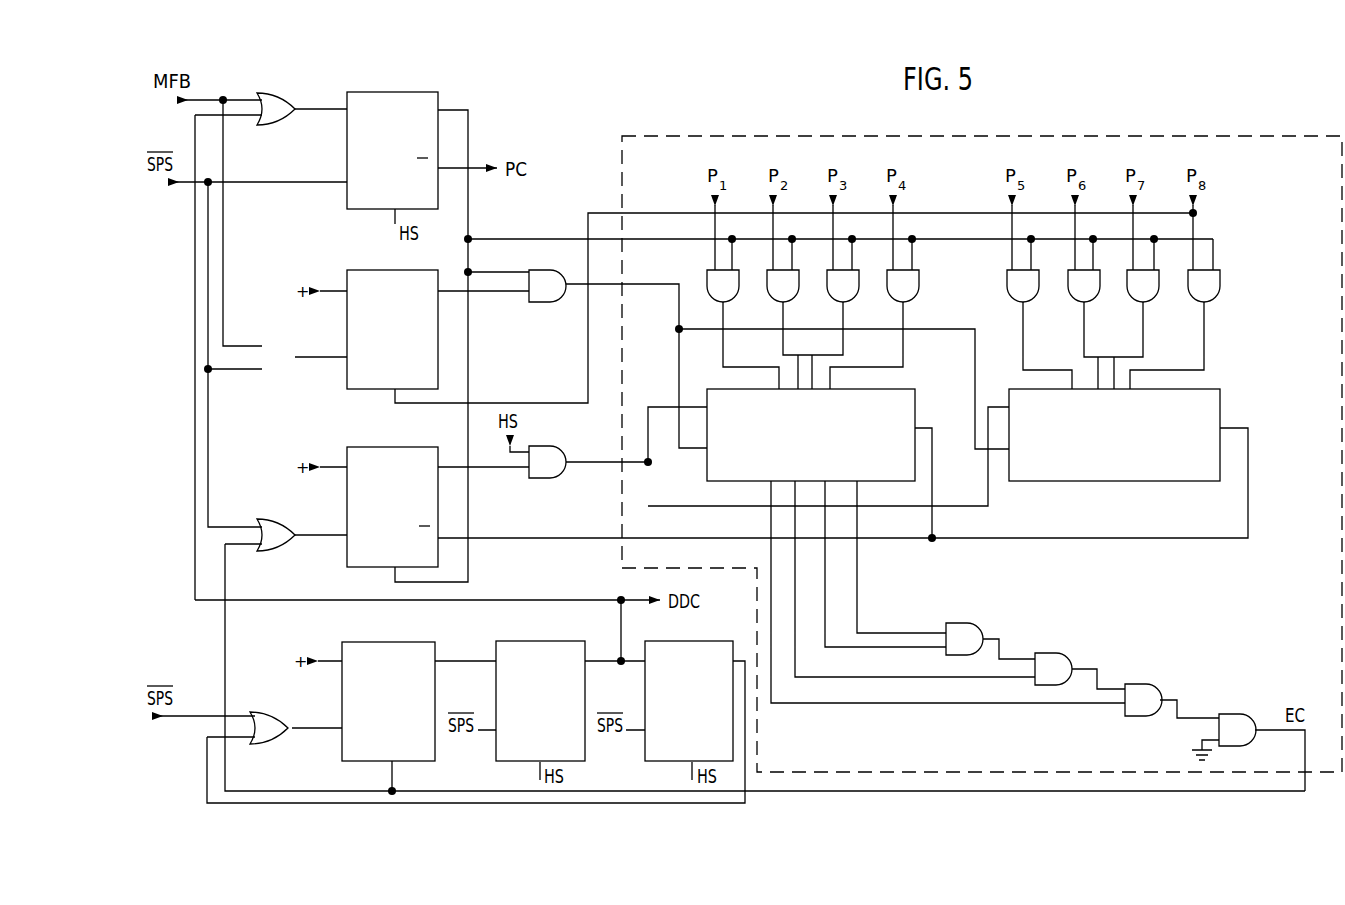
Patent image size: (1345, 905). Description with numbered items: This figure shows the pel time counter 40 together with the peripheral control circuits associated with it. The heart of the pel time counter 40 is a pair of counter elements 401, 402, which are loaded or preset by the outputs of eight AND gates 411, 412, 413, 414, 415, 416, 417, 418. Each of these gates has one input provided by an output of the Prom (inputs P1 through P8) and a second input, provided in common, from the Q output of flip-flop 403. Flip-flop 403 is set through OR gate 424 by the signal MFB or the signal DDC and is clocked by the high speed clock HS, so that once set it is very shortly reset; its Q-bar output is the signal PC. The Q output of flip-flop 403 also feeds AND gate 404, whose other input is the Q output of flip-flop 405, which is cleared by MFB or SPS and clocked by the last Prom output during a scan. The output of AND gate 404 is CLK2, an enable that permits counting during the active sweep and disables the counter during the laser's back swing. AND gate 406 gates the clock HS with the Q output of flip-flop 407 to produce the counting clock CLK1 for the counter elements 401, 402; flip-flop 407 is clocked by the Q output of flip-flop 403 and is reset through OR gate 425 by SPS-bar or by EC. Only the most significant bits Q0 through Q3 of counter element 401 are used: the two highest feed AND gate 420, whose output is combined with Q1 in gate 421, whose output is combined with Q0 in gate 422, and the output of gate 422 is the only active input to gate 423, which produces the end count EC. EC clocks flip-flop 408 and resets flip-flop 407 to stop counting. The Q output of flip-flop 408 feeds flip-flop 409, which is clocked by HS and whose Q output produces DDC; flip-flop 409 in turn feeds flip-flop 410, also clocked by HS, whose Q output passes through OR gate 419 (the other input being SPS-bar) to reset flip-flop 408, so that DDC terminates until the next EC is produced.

The pel time counter 40 is at (1197, 138).
The counter element 401 is at (900, 389).
The counter element 402 is at (1216, 389).
The flip-flop 403 is at (388, 93).
The AND gate 404 is at (564, 271).
The flip-flop 405 is at (375, 268).
The AND gate 406 is at (572, 434).
The flip-flop 407 is at (402, 447).
The flip-flop 408 is at (389, 642).
The flip-flop 409 is at (534, 641).
The flip-flop 410 is at (684, 641).
The AND gate 411 is at (736, 297).
The AND gate 412 is at (796, 297).
The AND gate 413 is at (856, 297).
The AND gate 414 is at (916, 297).
The AND gate 415 is at (1036, 297).
The AND gate 416 is at (1097, 297).
The AND gate 417 is at (1156, 297).
The AND gate 418 is at (1217, 297).
The OR gate 419 is at (277, 713).
The AND gate 420 is at (951, 623).
The gate 421 is at (1051, 653).
The gate 422 is at (1140, 684).
The AND gate 423 is at (1236, 714).
The OR gate 424 is at (290, 86).
The OR gate 425 is at (282, 520).